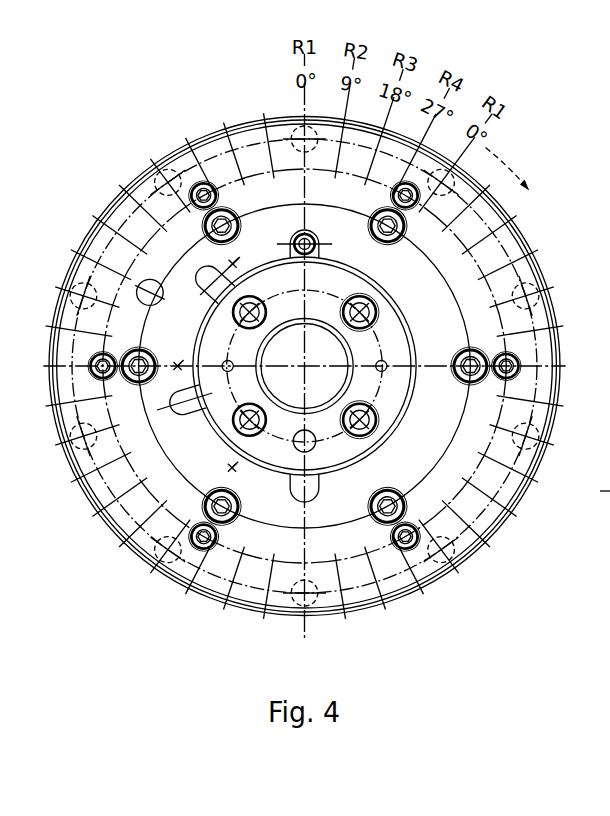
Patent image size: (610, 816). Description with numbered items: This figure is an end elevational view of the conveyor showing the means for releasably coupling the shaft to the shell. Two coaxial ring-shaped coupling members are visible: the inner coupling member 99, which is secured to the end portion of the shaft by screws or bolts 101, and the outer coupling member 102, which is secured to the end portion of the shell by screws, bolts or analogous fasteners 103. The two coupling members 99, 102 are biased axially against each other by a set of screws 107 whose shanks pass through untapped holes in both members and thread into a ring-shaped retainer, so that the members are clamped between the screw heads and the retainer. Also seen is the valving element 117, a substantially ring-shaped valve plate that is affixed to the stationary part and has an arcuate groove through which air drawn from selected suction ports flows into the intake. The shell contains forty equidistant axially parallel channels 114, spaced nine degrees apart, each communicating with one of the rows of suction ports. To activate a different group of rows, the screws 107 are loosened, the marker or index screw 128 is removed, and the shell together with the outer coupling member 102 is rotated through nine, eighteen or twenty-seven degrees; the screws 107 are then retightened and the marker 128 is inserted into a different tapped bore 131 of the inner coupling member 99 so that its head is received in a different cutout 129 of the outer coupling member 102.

The inner coupling member 99 is at (368, 445).
The screws or bolts 101 is at (373, 423).
The outer coupling member 102 is at (363, 590).
The fasteners 103 is at (467, 557).
The screws 107 is at (230, 516).
The channels 114 is at (533, 290).
The valving element 117 is at (593, 493).
The screw 128 is at (322, 219).
The cutout 129 is at (160, 293).
The tapped bore 131 is at (232, 262).